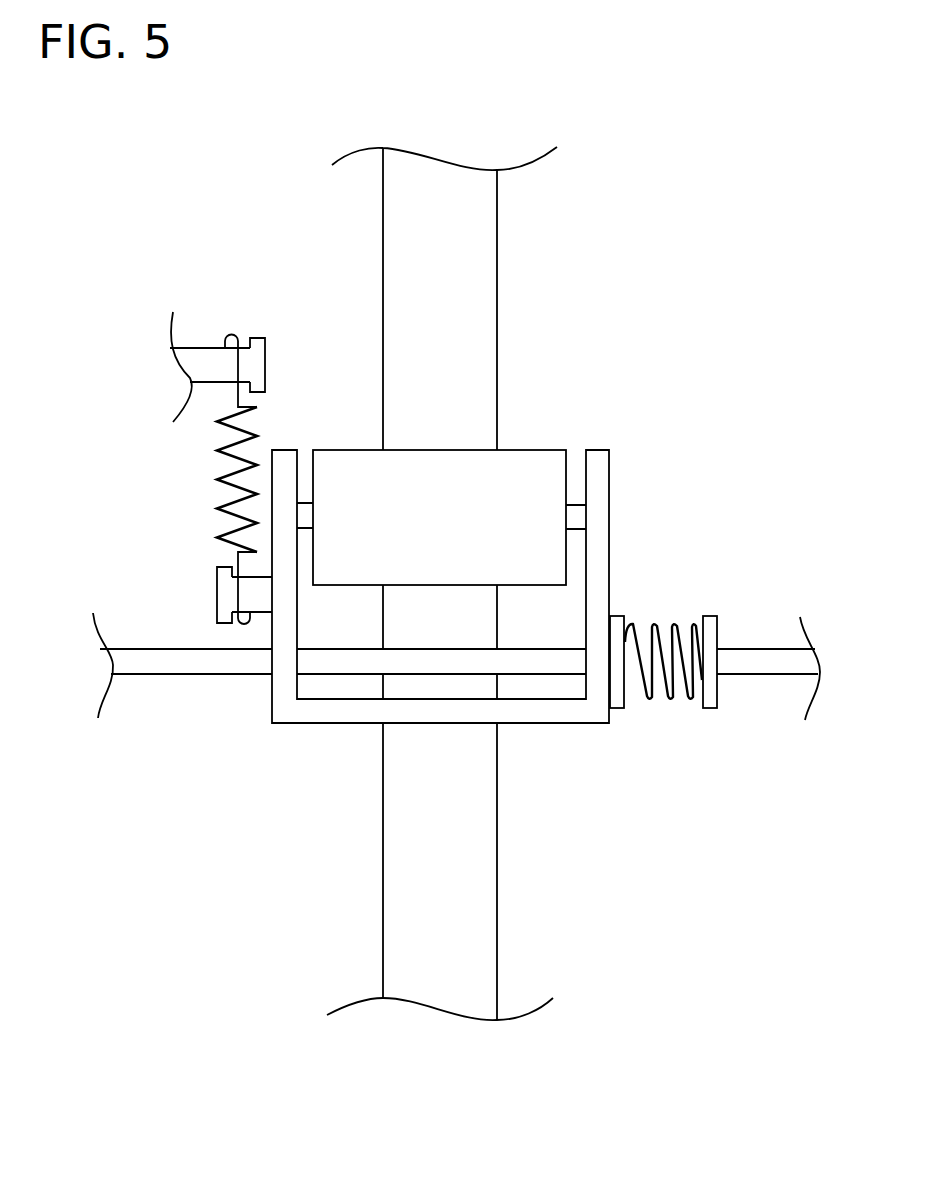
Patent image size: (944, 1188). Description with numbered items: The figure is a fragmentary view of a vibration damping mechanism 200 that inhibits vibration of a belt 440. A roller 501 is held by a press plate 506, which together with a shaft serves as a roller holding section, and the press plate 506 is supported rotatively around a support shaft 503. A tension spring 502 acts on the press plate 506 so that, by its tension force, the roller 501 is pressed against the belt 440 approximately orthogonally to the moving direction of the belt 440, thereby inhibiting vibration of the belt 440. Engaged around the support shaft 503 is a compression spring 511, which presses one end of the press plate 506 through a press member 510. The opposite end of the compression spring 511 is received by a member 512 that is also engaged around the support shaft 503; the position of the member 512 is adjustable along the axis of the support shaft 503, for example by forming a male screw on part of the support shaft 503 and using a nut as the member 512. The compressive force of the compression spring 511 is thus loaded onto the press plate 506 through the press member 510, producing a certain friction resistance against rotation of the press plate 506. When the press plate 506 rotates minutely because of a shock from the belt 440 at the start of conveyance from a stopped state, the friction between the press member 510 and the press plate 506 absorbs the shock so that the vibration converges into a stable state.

The vibration damping mechanism 200 is at (261, 783).
The belt 440 is at (499, 263).
The roller 501 is at (533, 450).
The tension spring 502 is at (215, 476).
The support shaft 503 is at (178, 662).
The press plate 506 is at (607, 466).
The press member 510 is at (617, 712).
The compression spring 511 is at (657, 701).
The member 512 is at (710, 710).